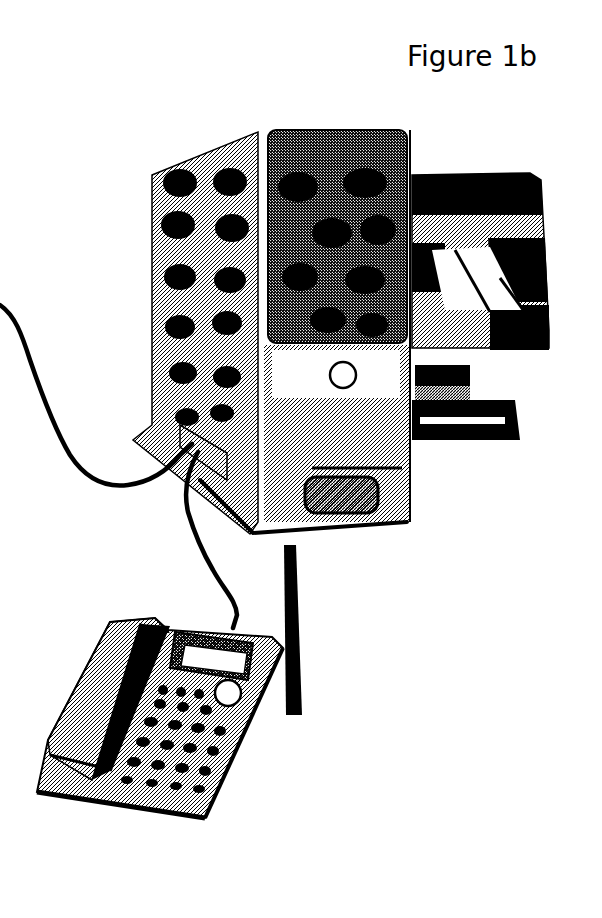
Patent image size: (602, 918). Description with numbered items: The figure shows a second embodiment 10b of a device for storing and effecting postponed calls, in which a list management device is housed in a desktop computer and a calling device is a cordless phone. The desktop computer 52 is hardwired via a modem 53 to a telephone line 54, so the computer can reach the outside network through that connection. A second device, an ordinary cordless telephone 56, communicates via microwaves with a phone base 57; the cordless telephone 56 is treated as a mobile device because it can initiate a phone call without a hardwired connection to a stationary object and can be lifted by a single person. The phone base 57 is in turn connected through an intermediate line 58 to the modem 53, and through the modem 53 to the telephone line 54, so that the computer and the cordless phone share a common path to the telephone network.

The second embodiment 10b is at (80, 61).
The desktop computer 52 is at (335, 508).
The modem 53 is at (181, 422).
The telephone line 54 is at (86, 470).
The cordless telephone 56 is at (103, 650).
The phone base 57 is at (237, 707).
The intermediate line 58 is at (195, 528).